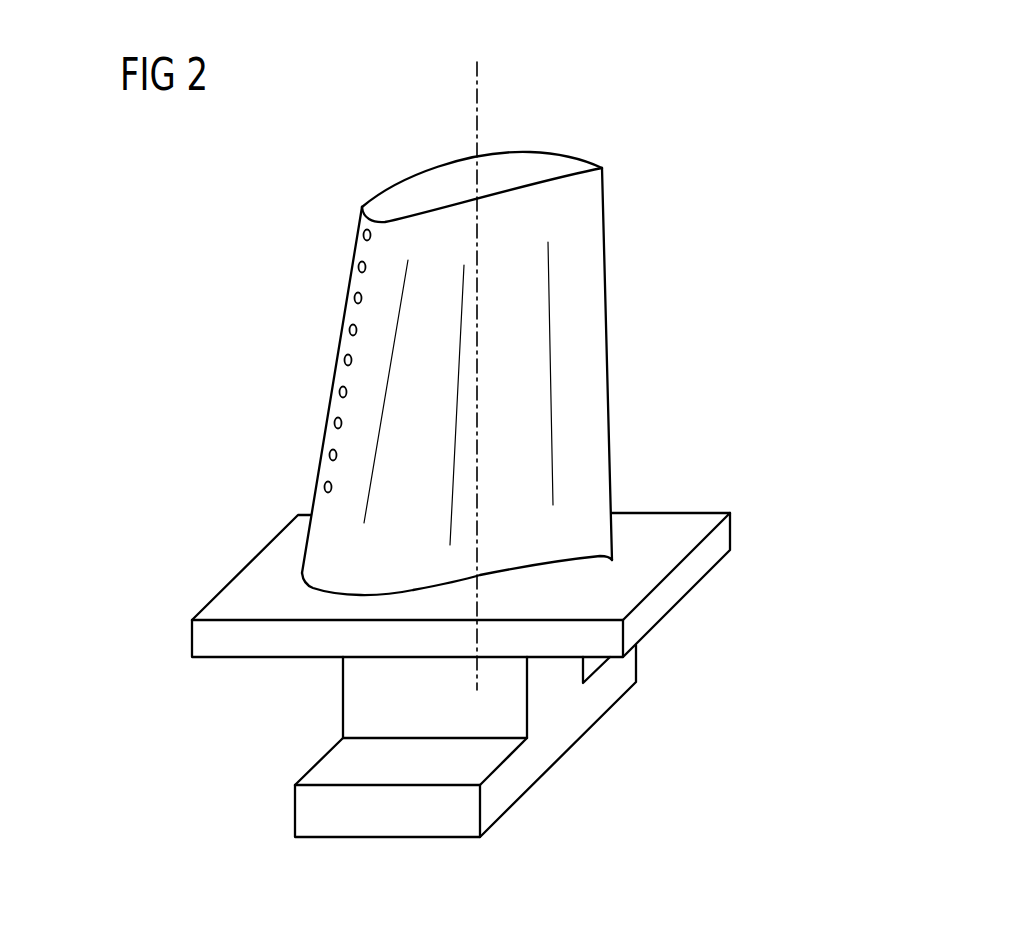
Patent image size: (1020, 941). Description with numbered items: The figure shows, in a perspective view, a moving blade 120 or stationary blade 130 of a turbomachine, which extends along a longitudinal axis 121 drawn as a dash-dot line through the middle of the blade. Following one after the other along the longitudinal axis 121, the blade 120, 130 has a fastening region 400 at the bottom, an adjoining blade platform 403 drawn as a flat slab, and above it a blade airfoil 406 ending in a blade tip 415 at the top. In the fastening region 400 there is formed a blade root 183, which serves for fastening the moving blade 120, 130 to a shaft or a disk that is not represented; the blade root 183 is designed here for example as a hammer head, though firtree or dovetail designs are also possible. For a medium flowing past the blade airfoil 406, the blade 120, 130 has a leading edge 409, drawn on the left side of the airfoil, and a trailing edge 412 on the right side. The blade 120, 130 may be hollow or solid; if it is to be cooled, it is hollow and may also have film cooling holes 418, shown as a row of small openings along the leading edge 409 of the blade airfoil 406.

The longitudinal axis 121 is at (478, 80).
The moving blade 120 is at (247, 485).
The stationary blade 130 is at (458, 393).
The leading edge 409 is at (332, 309).
The trailing edge 412 is at (620, 333).
The blade tip 415 is at (415, 188).
The film cooling holes 418 is at (363, 236).
The blade airfoil 406 is at (360, 416).
The blade platform 403 is at (687, 577).
The fastening region 400 is at (456, 741).
The blade root 183 is at (333, 770).